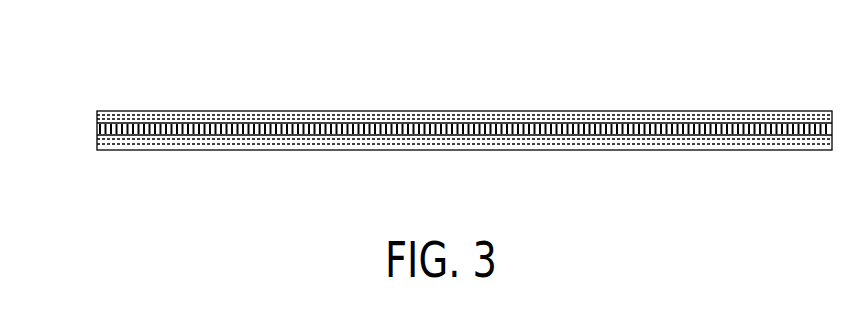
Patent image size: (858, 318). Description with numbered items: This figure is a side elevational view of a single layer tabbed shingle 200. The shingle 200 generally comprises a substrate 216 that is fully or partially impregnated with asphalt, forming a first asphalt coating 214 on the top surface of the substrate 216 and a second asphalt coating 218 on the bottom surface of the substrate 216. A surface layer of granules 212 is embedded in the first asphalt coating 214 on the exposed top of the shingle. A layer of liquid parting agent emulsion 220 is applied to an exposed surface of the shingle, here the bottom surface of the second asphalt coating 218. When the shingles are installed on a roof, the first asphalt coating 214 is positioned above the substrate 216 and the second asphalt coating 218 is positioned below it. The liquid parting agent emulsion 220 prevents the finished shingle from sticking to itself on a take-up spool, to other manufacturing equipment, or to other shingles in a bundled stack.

The shingle 200 is at (211, 81).
The surface layer of granules 212 is at (378, 119).
The first asphalt coating 214 is at (333, 116).
The substrate 216 is at (97, 128).
The second asphalt coating 218 is at (332, 141).
The layer of liquid parting agent emulsion 220 is at (382, 145).